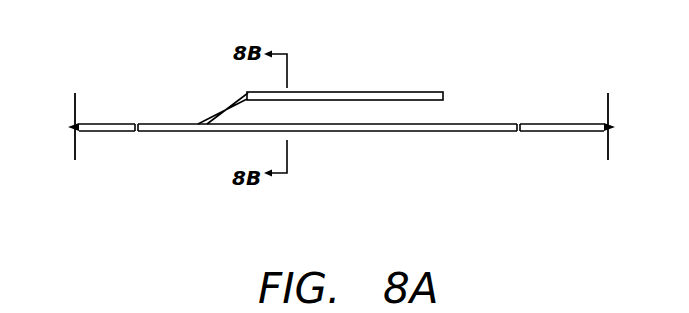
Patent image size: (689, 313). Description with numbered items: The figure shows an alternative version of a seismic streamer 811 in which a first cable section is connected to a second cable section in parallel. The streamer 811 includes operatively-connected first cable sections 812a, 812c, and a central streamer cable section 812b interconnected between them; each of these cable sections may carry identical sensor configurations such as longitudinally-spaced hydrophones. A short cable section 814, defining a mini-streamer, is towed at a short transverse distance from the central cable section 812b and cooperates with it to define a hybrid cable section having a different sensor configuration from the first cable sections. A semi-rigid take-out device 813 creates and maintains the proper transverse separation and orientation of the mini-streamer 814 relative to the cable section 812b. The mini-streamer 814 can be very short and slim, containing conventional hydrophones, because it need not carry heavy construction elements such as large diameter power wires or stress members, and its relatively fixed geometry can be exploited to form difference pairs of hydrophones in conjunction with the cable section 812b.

The streamer 811 is at (188, 150).
The first cable section 812a is at (97, 135).
The central streamer cable section 812b is at (403, 146).
The first cable section 812c is at (538, 123).
The take-out device 813 is at (214, 113).
The short cable section (mini-streamer) 814 is at (331, 66).